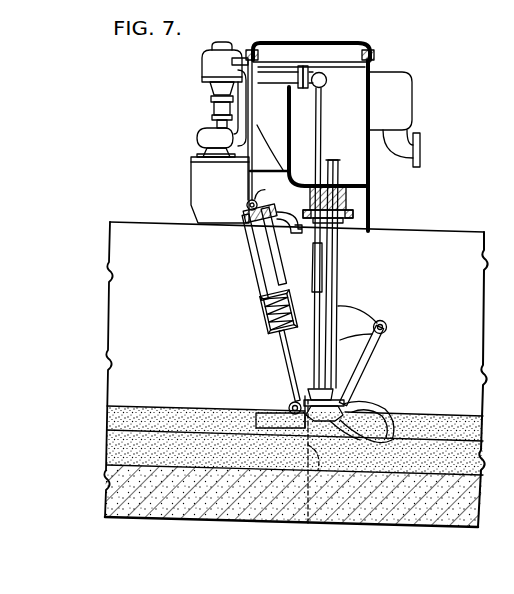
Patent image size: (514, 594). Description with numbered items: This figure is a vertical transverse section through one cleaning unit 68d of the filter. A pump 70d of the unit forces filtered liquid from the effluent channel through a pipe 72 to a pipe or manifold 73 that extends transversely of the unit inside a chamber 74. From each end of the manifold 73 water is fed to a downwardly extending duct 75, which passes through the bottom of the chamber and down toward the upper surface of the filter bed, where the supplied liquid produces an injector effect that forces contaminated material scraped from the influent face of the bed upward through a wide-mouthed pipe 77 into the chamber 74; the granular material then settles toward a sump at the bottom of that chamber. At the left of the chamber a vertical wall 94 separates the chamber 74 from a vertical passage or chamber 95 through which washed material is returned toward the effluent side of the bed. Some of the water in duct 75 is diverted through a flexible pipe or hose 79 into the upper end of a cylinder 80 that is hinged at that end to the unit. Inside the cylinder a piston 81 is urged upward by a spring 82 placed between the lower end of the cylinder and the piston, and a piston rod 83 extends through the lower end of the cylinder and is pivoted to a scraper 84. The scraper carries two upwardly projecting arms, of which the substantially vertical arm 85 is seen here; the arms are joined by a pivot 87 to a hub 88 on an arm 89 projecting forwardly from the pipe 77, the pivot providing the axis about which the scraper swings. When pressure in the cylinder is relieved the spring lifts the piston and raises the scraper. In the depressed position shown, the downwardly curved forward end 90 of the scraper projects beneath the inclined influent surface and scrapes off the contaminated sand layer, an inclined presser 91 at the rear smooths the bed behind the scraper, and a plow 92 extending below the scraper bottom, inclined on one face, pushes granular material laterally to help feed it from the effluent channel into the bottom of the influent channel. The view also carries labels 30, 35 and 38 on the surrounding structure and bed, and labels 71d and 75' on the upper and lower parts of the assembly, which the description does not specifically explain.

The subsoil / ground 30 is at (125, 496).
The soil layer 35 is at (120, 443).
The frame 38 is at (430, 233).
The unit 68d is at (356, 45).
The pump 70d is at (208, 134).
The motor 71d is at (205, 69).
The pipe 72 is at (273, 78).
The pipe or manifold 73 is at (320, 71).
The chamber 74 is at (350, 98).
The downwardly extending duct 75 is at (341, 238).
The plunger tip 75' is at (381, 396).
The pipe 77 is at (341, 172).
The flexible pipe or hose 79 is at (297, 236).
The cylinder 80 is at (256, 264).
The piston 81 is at (270, 287).
The spring 82 is at (268, 312).
The piston rod 83 is at (280, 338).
The scraper 84 is at (313, 421).
The arm 85 is at (358, 366).
The pivot 87 is at (387, 332).
The hub 88 is at (387, 327).
The arm 89 is at (353, 330).
The forward end 90 is at (383, 428).
The presser 91 is at (267, 423).
The plow 92 is at (308, 522).
The vertical wall 94 is at (296, 127).
The vertical passage or chamber 95 is at (273, 120).